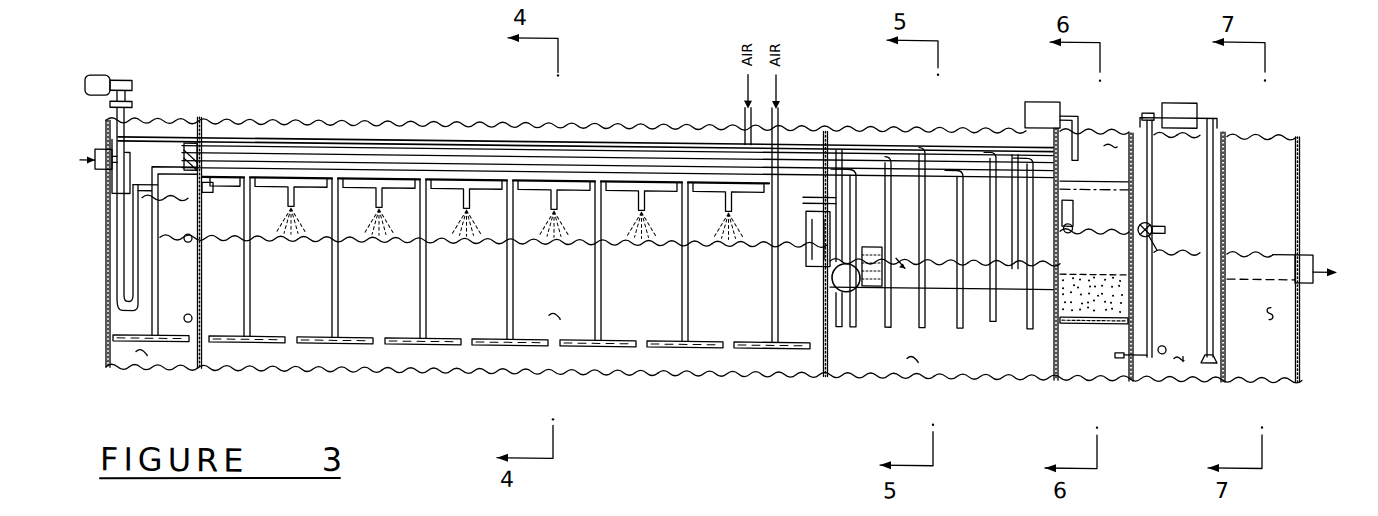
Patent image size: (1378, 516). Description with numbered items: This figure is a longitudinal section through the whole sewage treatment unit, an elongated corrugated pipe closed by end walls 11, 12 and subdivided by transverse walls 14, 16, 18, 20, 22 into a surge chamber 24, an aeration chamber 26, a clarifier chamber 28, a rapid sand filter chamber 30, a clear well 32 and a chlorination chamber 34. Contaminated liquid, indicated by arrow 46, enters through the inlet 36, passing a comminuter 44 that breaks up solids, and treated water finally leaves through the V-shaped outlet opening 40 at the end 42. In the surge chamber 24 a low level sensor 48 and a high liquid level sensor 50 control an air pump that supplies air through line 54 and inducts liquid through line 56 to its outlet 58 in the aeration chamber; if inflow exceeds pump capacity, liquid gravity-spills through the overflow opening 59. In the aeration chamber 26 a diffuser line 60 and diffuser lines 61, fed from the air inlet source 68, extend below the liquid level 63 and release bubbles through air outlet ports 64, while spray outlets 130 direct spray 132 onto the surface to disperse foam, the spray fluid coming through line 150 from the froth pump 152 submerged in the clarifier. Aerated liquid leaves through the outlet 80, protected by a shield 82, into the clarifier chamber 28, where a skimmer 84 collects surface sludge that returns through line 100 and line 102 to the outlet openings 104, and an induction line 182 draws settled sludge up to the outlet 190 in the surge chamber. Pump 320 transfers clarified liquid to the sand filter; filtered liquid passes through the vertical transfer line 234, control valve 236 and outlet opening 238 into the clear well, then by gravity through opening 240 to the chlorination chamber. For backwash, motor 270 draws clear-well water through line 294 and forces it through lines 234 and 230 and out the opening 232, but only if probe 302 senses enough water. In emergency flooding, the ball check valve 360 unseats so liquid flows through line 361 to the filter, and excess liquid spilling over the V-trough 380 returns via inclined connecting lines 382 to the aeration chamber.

The end wall 11 is at (105, 349).
The end wall 12 is at (1298, 340).
The transverse wall 14 is at (200, 348).
The transverse wall 16 is at (825, 350).
The transverse wall 18 is at (1055, 353).
The transverse wall 20 is at (1130, 317).
The transverse wall 22 is at (1225, 348).
The surge chamber 24 is at (140, 354).
The aeration chamber 26 is at (553, 312).
The clarifier chamber 28 is at (912, 352).
The rapid sand filter chamber 30 is at (1113, 130).
The clear well 32 is at (1185, 344).
The chlorination chamber 34 is at (1275, 298).
The inlet 36 is at (97, 159).
The outlet opening 40 is at (1305, 240).
The end 42 is at (1298, 145).
The comminuter 44 is at (96, 75).
The arrow 46 is at (90, 151).
The low level sensor 48 is at (188, 320).
The high liquid level sensor 50 is at (184, 238).
The air line 54 is at (118, 244).
The fluid line 56 is at (133, 224).
The outlet 58 is at (214, 186).
The overflow opening 59 is at (192, 179).
The diffuser line 60 is at (360, 340).
The diffuser lines 61 is at (425, 300).
The liquid level 63 is at (578, 234).
The air outlet ports 64 is at (578, 340).
The air inlet source 68 is at (781, 111).
The outlet 80 is at (818, 229).
The shield 82 is at (812, 221).
The skimmer 84 is at (897, 252).
The line 100 is at (887, 245).
The line 102 is at (872, 245).
The outlet openings 104 is at (800, 201).
The spray outlets 130 is at (465, 200).
The spray 132 is at (478, 212).
The line 150 is at (312, 186).
The froth pump 152 is at (848, 283).
The induction line 182 is at (963, 297).
The outlet 190 is at (352, 166).
The vertical line 230 is at (1162, 340).
The opening 232 is at (1120, 346).
The vertical transfer line 234 is at (1148, 307).
The control valve 236 is at (1150, 212).
The outlet opening 238 is at (1157, 235).
The opening 240 is at (1230, 231).
The backwash motor 270 is at (1180, 96).
The line 294 is at (1210, 161).
The probe 302 is at (1179, 348).
The pump 320 is at (1045, 98).
The ball check valve 360 is at (1074, 210).
The line 361 is at (970, 189).
The V-trough 380 is at (1097, 177).
The connecting lines 382 is at (1025, 106).